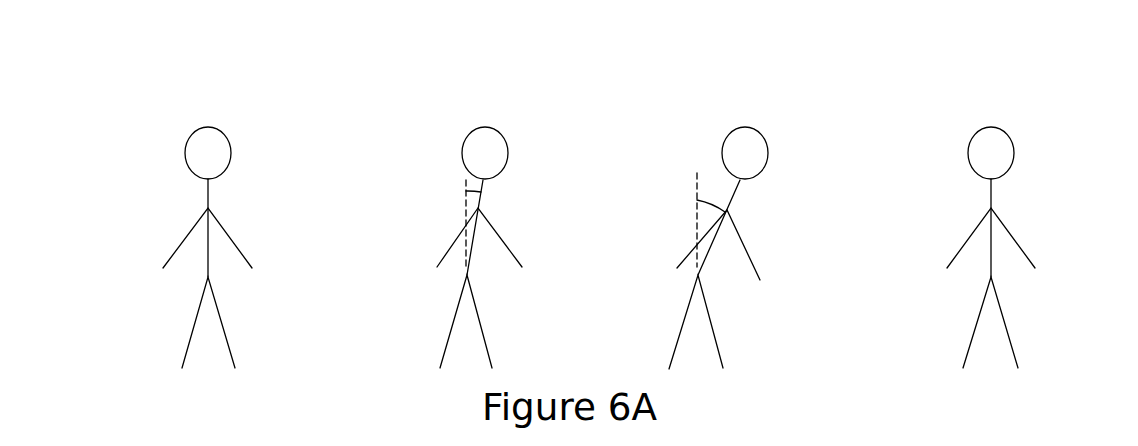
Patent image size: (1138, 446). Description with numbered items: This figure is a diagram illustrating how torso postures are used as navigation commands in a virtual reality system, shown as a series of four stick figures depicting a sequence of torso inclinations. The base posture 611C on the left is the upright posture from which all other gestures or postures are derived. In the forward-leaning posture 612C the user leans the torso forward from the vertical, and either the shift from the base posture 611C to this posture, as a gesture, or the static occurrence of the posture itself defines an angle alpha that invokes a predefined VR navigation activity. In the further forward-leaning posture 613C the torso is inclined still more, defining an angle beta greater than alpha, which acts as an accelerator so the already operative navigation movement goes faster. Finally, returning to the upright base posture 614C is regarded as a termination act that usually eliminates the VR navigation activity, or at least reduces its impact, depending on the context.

The base posture 611C is at (190, 83).
The forward-leaning posture 612C is at (465, 83).
The further forward-leaning posture 613C is at (723, 83).
The returned base posture 614C is at (969, 83).